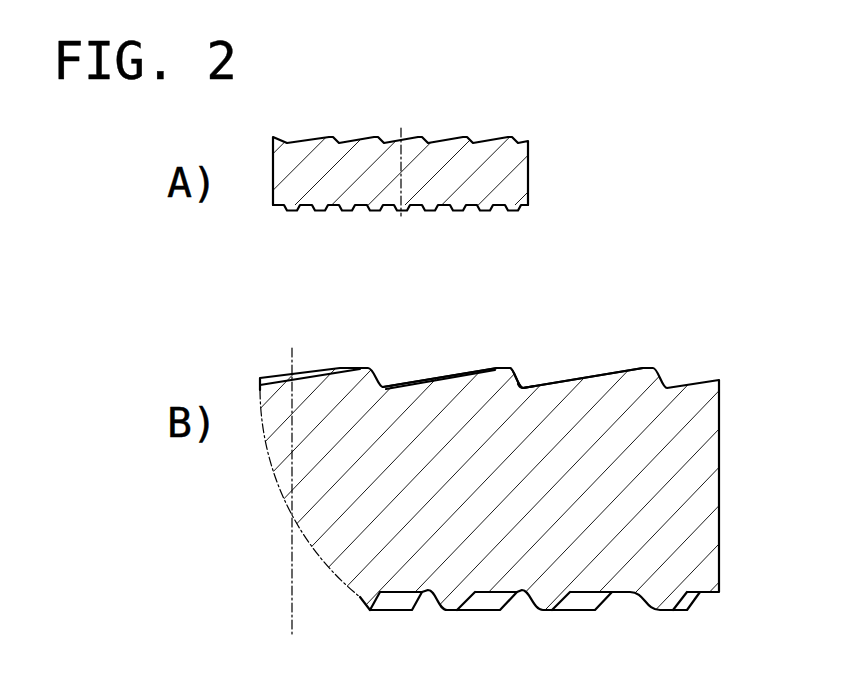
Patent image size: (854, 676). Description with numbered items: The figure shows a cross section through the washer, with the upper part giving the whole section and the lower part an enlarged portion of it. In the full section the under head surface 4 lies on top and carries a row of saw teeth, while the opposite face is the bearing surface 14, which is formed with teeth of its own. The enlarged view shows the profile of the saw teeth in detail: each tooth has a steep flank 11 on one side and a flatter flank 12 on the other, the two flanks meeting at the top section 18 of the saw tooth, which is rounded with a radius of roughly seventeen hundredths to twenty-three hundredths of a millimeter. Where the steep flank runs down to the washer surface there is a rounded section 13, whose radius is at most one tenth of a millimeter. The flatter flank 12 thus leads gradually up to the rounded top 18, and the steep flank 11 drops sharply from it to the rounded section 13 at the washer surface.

The under head surface 4 is at (408, 128).
The bearing surface 14 is at (406, 222).
The flatter flank of saw tooth 12 is at (463, 372).
The top section of saw tooth 18 is at (511, 371).
The steep flank of saw tooth 11 is at (518, 387).
The section where steep flank ends at washer surface 13 is at (528, 386).